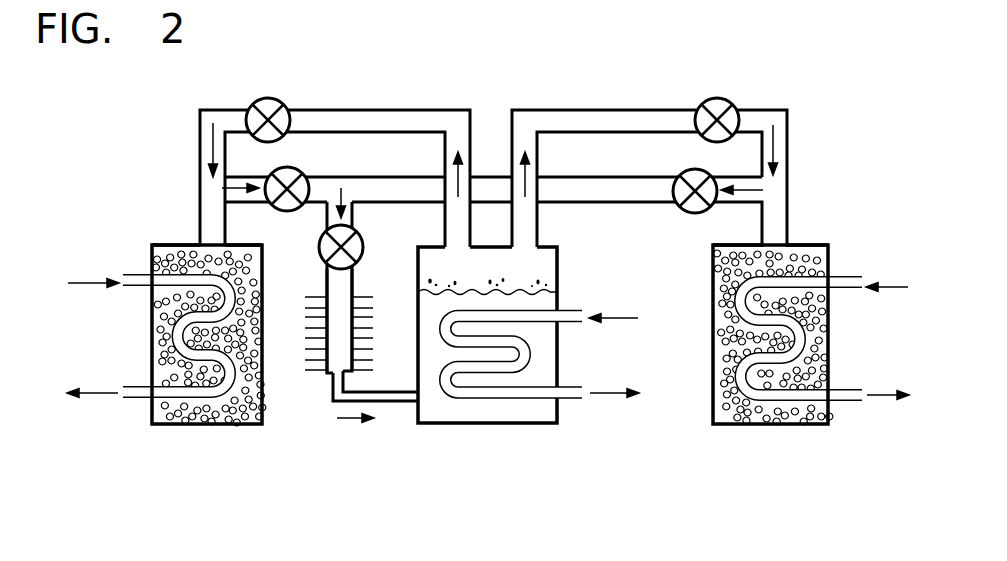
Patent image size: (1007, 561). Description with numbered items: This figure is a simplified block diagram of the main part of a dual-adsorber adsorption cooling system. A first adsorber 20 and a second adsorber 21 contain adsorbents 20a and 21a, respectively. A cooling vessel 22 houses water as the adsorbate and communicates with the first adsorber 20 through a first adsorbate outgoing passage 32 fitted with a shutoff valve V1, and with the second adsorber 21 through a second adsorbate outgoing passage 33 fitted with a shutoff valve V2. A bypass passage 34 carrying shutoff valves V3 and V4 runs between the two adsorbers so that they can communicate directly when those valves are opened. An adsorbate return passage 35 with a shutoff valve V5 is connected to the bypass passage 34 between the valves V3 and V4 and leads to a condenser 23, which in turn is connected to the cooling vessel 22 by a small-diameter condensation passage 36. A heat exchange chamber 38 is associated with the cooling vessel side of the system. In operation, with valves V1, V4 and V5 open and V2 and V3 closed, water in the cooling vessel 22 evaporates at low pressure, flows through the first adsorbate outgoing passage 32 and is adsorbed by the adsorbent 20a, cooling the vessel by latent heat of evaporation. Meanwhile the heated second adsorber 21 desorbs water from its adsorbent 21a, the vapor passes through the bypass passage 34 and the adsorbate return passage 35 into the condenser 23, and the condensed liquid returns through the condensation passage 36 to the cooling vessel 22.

The first adsorber 20 is at (210, 425).
The adsorbent 20a is at (170, 245).
The second adsorber 21 is at (722, 426).
The adsorbent 21a is at (815, 245).
The cooling vessel 22 is at (461, 425).
The condenser 23 is at (333, 358).
The first adsorbate outgoing passage 32 is at (425, 117).
The second adsorbate outgoing passage 33 is at (570, 120).
The bypass passage 34 is at (490, 187).
The adsorbate return passage 35 is at (327, 280).
The condensation passage 36 is at (392, 404).
The heat exchange chamber 38 is at (575, 309).
The shutoff valve V1 is at (268, 98).
The shutoff valve V2 is at (717, 98).
The shutoff valve V3 is at (302, 172).
The shutoff valve V4 is at (680, 174).
The shutoff valve V5 is at (361, 238).